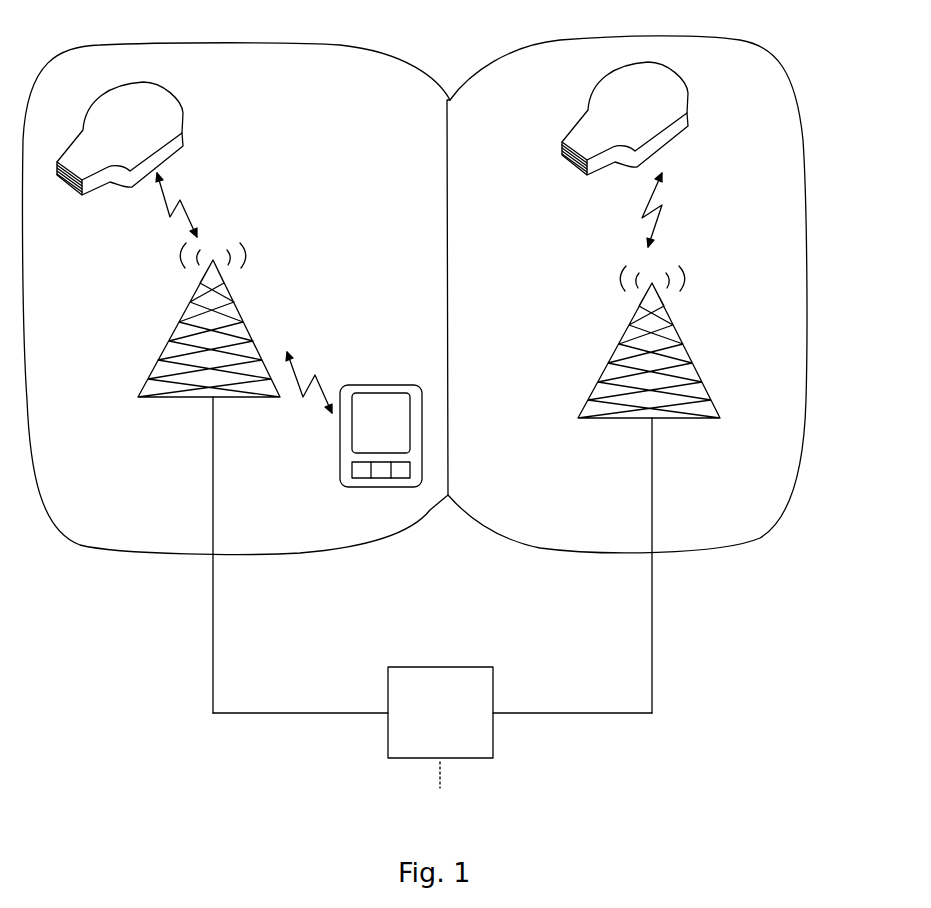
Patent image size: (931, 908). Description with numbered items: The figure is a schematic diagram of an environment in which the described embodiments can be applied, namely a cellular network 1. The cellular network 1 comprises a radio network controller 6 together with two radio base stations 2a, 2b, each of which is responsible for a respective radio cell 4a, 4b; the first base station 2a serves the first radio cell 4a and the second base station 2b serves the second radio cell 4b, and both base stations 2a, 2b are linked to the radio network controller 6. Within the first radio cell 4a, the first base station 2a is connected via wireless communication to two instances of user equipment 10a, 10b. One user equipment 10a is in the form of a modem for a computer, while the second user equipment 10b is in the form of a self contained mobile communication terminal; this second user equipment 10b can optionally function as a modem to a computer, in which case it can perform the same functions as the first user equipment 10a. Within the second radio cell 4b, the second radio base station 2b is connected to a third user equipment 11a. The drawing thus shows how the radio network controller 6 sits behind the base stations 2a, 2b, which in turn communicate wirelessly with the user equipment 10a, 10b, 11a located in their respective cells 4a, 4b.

The cellular network 1 is at (176, 664).
The first radio base station 2a is at (240, 320).
The second radio base station 2b is at (678, 338).
The first radio cell 4a is at (272, 43).
The second radio cell 4b is at (720, 45).
The radio network controller 6 is at (433, 700).
The first user equipment 10a is at (110, 136).
The second user equipment 10b is at (360, 432).
The third user equipment 11a is at (625, 118).